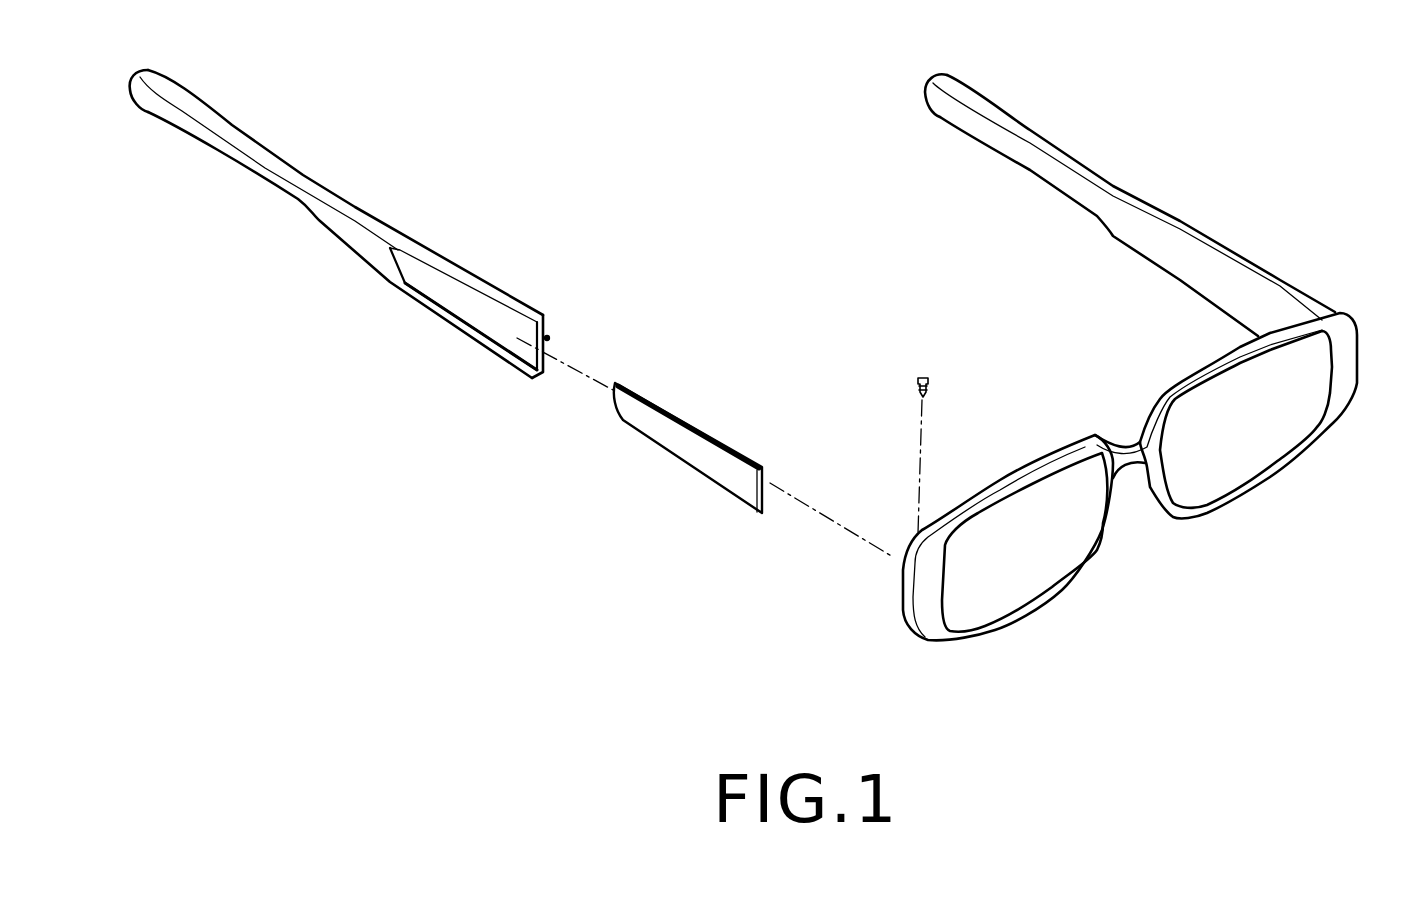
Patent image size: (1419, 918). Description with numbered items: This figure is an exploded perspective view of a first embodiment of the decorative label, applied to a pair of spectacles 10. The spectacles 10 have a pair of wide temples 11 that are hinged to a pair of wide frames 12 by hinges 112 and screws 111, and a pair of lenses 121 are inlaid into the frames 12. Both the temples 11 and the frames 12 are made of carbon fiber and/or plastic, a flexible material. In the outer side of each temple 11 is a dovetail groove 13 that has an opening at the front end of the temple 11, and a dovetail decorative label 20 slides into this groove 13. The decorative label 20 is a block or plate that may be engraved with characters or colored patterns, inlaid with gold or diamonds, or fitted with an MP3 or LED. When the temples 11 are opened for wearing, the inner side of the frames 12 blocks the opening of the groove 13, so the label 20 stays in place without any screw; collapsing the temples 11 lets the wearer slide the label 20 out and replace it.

The spectacles 10 is at (759, 367).
The temples 11 is at (410, 245).
The frames 12 is at (1097, 476).
The dovetail groove 13 is at (477, 317).
The decorative label 20 is at (693, 457).
The screws 111 is at (920, 377).
The hinges 112 is at (553, 333).
The lenses 121 is at (1237, 450).